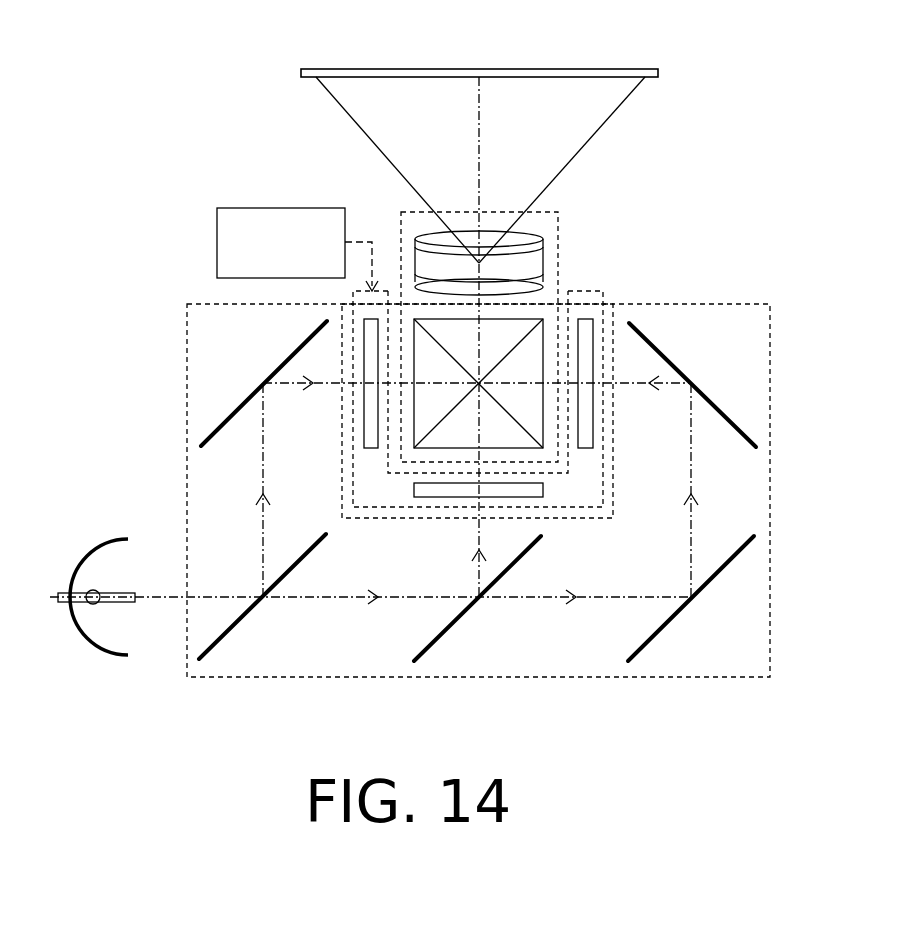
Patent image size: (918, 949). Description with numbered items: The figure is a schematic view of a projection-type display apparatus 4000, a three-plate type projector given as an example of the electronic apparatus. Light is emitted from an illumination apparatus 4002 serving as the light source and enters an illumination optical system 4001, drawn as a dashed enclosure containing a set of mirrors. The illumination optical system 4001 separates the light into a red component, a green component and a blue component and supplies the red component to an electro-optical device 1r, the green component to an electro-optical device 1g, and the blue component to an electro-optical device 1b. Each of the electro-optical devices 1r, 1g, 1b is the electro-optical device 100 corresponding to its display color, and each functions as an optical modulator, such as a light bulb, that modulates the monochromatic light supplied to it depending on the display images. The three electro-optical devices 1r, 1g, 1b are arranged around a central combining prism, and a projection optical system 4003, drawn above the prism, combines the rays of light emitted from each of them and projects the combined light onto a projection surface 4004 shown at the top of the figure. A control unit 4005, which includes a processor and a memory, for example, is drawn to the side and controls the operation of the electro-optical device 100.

The projection-type display apparatus 4000 is at (190, 154).
The illumination optical system 4001 is at (735, 304).
The illumination apparatus 4002 is at (108, 540).
The projection optical system 4003 is at (558, 253).
The projection surface 4004 is at (522, 80).
The control unit 4005 is at (217, 253).
The electro-optical device 1r is at (364, 433).
The electro-optical device 1g is at (420, 497).
The electro-optical device 1b is at (593, 425).
The electro-optical device 100 is at (478, 452).